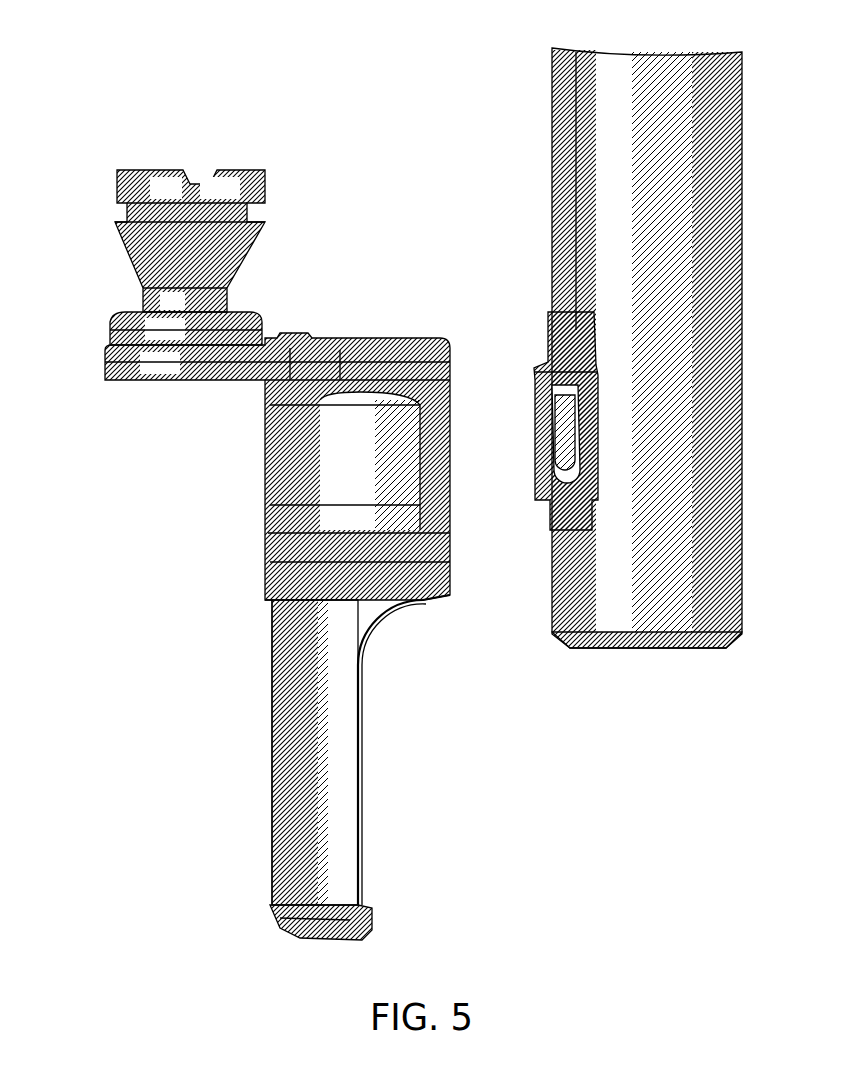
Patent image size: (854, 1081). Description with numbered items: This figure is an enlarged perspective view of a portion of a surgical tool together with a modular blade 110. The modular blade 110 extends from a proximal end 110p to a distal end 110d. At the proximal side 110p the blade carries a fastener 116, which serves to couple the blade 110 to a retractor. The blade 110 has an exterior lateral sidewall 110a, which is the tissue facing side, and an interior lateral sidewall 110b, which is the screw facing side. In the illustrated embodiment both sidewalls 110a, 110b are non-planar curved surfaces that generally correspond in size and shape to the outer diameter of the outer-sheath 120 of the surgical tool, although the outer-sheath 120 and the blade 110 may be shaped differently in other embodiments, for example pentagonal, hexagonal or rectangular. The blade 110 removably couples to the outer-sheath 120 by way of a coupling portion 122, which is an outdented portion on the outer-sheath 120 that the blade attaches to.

The modular blade 110 is at (290, 742).
The exterior lateral sidewall 110a is at (205, 630).
The interior lateral sidewall 110b is at (402, 698).
The distal end 110d is at (295, 970).
The proximal end 110p is at (226, 126).
The fastener 116 is at (118, 203).
The outer-sheath 120 is at (722, 546).
The coupling portion 122 is at (500, 302).